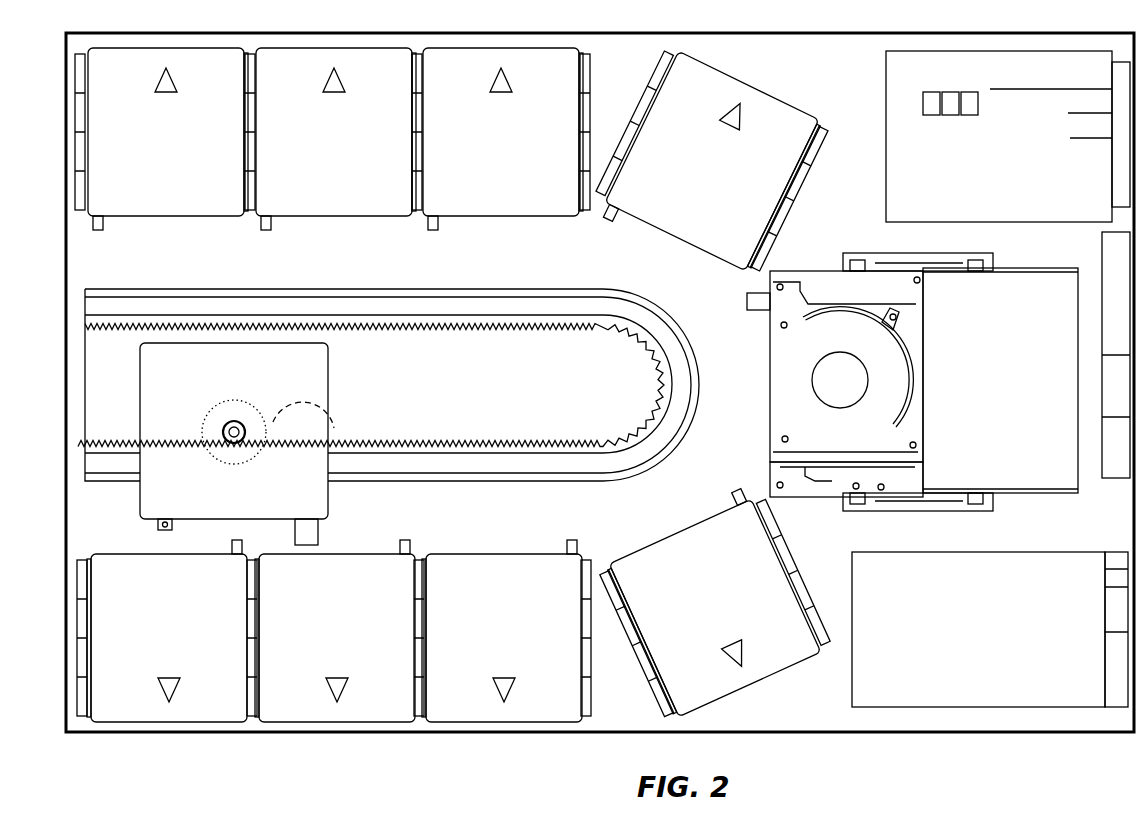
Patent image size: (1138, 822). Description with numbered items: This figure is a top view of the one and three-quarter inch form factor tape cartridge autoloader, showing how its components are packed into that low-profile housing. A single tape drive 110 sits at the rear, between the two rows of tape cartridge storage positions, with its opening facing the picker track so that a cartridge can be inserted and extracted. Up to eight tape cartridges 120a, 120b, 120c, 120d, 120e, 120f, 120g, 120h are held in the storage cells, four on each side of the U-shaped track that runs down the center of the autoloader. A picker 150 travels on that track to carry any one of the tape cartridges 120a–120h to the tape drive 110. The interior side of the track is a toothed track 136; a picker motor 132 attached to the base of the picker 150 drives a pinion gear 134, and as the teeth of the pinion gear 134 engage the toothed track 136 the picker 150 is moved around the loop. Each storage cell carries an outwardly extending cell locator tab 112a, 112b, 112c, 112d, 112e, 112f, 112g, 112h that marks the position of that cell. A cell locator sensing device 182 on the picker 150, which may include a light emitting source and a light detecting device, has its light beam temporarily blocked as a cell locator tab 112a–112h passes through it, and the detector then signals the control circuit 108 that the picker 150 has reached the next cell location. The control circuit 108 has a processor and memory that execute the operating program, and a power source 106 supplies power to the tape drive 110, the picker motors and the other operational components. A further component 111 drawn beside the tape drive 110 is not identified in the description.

The power source 106 is at (990, 616).
The control circuit 108 is at (984, 203).
The tape drive 110 is at (1018, 338).
The connector tab 111 is at (753, 312).
The cell locator tab 112a is at (232, 547).
The cell locator tab 112b is at (410, 547).
The cell locator tab 112c is at (577, 548).
The cell locator tab 112d is at (733, 469).
The cell locator tab 112e is at (612, 222).
The cell locator tab 112f is at (438, 223).
The cell locator tab 112g is at (271, 223).
The cell locator tab 112h is at (103, 223).
The tape cartridge 120a is at (235, 589).
The tape cartridge 120b is at (403, 589).
The tape cartridge 120c is at (569, 589).
The tape cartridge 120d is at (757, 552).
The tape cartridge 120e is at (719, 102).
The tape cartridge 120f is at (572, 75).
The tape cartridge 120g is at (408, 75).
The tape cartridge 120h is at (240, 75).
The picker motor 132 is at (322, 405).
The pinion gear 134 is at (222, 430).
The toothed track 136 is at (465, 442).
The picker 150 is at (310, 371).
The cell locator sensing device 182 is at (316, 533).